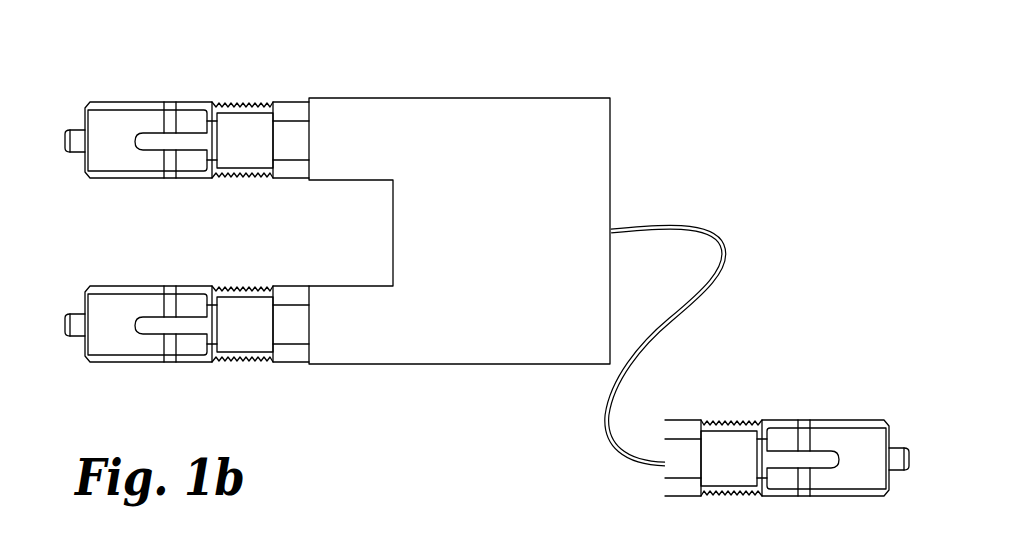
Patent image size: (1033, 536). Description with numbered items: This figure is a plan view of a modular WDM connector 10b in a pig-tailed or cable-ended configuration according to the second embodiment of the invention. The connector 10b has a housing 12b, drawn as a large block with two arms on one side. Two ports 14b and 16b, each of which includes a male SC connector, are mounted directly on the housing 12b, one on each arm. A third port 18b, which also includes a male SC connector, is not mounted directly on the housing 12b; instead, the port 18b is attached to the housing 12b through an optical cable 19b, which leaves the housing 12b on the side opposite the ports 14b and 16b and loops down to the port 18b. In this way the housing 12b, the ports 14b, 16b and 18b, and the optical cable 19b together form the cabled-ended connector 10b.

The connector 10b is at (441, 42).
The housing 12b is at (565, 97).
The port 14b is at (118, 102).
The port 16b is at (118, 287).
The port 18b is at (818, 420).
The optical cable 19b is at (707, 233).